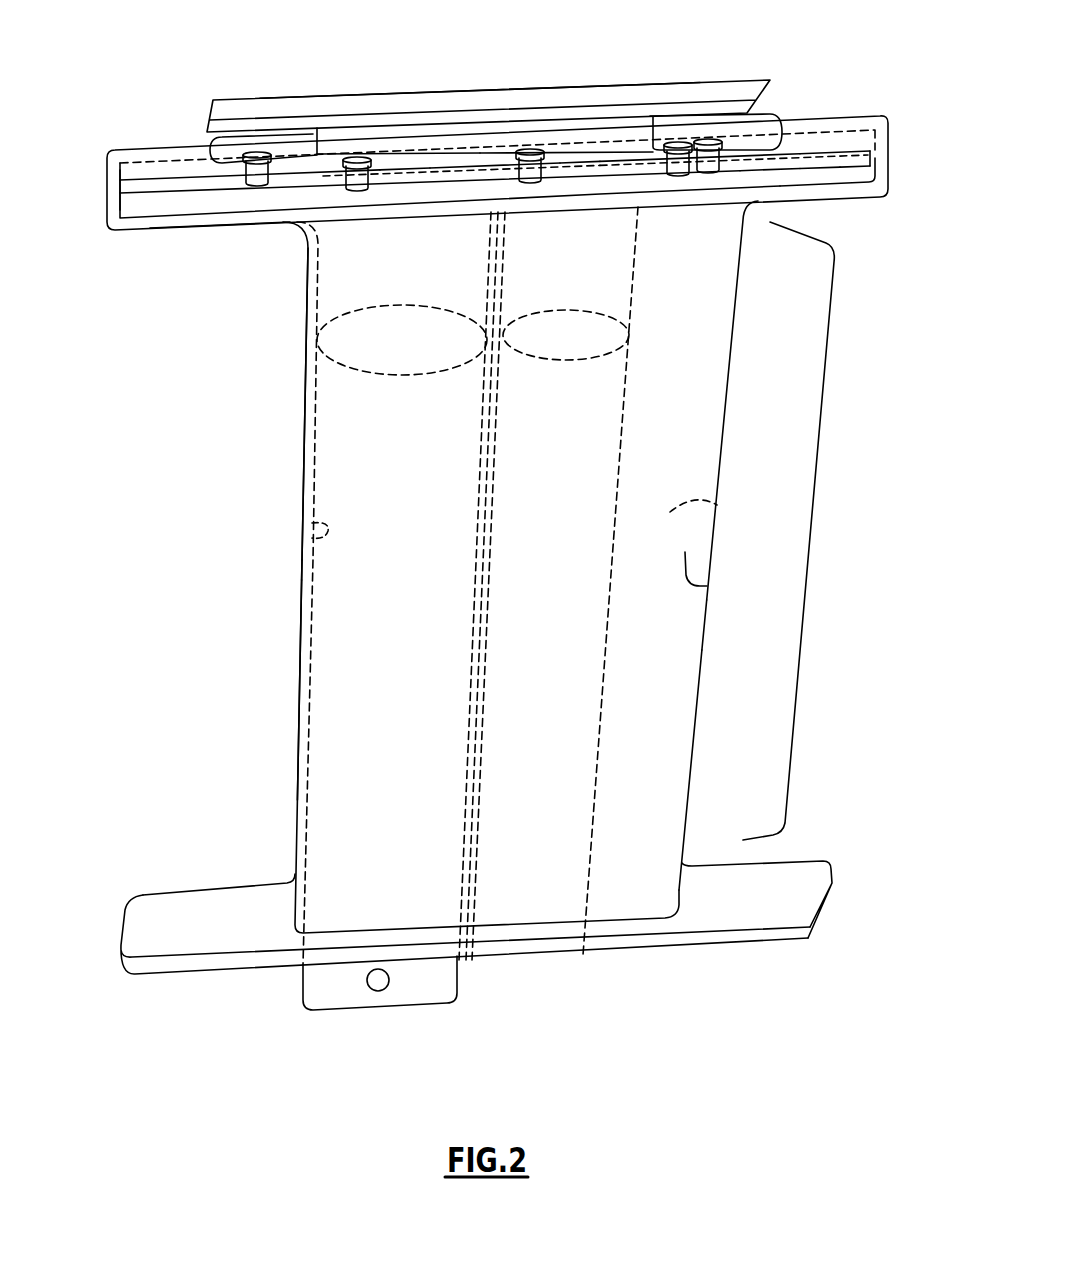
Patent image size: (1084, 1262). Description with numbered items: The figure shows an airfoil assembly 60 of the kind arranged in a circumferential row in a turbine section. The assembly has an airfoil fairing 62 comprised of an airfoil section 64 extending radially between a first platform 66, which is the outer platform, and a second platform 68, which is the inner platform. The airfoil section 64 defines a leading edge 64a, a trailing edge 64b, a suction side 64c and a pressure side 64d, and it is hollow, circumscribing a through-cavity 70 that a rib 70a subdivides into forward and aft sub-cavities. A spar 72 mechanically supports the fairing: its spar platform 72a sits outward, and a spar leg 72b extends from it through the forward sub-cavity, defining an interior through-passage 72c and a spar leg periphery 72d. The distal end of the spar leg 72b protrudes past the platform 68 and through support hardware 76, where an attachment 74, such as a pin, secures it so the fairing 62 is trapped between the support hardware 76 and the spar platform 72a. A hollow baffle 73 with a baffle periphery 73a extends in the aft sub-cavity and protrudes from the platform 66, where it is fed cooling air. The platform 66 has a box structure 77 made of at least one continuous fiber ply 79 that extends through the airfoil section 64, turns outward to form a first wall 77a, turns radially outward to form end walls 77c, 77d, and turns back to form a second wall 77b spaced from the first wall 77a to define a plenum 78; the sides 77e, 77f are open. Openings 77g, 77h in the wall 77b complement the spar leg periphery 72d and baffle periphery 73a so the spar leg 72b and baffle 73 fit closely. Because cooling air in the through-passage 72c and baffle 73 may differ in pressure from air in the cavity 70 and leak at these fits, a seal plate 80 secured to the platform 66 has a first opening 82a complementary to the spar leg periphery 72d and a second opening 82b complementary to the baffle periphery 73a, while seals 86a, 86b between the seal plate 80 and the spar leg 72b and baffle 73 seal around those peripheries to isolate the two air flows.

The airfoil assembly 60 is at (185, 583).
The airfoil fairing 62 is at (708, 765).
The airfoil section 64 is at (810, 537).
The leading edge 64a is at (300, 642).
The trailing edge 64b is at (705, 627).
The suction side 64c is at (707, 586).
The pressure side 64d is at (717, 508).
The first platform 66 is at (113, 248).
The second platform 68 is at (788, 878).
The through-cavity 70 is at (298, 570).
The rib 70a is at (478, 612).
The spar 72 is at (277, 95).
The spar platform 72a is at (360, 110).
The spar leg 72b is at (310, 466).
The through-passage 72c is at (310, 537).
The spar leg periphery 72d is at (405, 377).
The baffle 73 is at (606, 636).
The baffle periphery 73a is at (567, 360).
The attachment 74 is at (410, 992).
The support hardware 76 is at (757, 937).
The box structure 77 is at (882, 151).
The first wall 77a is at (817, 190).
The second wall 77b is at (818, 153).
The end wall 77c is at (115, 187).
The end wall 77d is at (882, 178).
The side 77e is at (857, 178).
The side 77f is at (757, 180).
The opening 77g is at (402, 170).
The opening 77h is at (578, 163).
The plenum 78 is at (802, 184).
The fiber ply 79 is at (215, 232).
The seal plate 80 is at (294, 152).
The first opening 82a is at (473, 154).
The second opening 82b is at (637, 150).
The seal 86a is at (447, 154).
The seal 86b is at (647, 150).